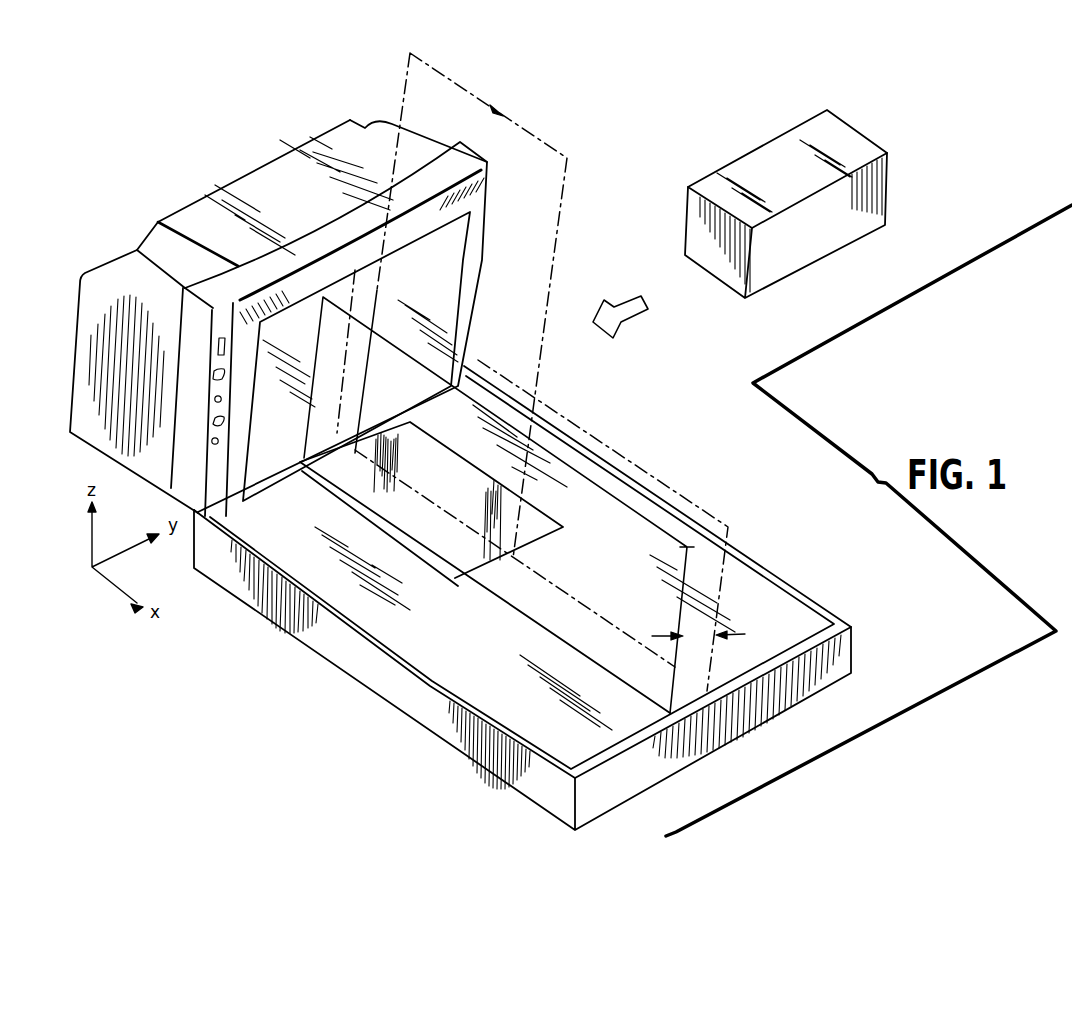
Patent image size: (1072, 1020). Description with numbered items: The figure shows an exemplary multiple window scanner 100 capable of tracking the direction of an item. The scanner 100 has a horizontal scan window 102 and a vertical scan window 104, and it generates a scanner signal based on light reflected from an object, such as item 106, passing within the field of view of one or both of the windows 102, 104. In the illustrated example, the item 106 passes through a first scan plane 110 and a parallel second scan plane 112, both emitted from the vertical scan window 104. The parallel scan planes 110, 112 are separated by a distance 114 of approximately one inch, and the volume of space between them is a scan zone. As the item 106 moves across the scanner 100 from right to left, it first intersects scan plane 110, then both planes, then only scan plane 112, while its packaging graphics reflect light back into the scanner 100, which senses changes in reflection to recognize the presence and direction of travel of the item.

The multiple window scanner 100 is at (189, 137).
The horizontal scan window 102 is at (470, 577).
The vertical scan window 104 is at (257, 460).
The item 106 is at (808, 252).
The first scan plane 110 is at (670, 487).
The second scan plane 112 is at (580, 477).
The distance 114 is at (698, 636).